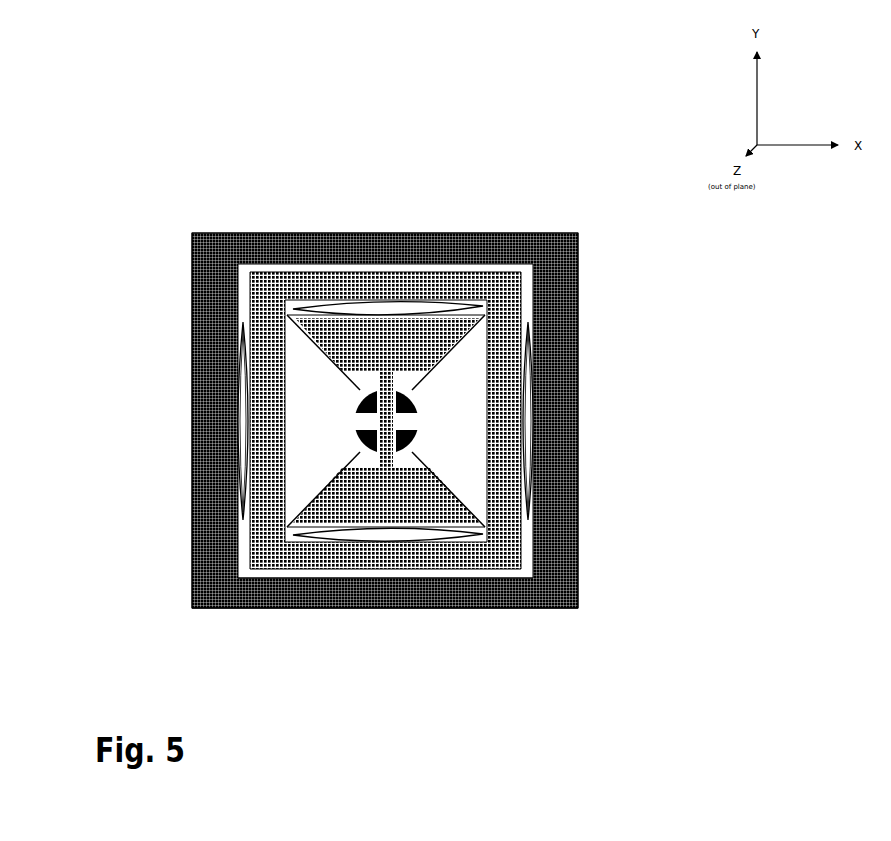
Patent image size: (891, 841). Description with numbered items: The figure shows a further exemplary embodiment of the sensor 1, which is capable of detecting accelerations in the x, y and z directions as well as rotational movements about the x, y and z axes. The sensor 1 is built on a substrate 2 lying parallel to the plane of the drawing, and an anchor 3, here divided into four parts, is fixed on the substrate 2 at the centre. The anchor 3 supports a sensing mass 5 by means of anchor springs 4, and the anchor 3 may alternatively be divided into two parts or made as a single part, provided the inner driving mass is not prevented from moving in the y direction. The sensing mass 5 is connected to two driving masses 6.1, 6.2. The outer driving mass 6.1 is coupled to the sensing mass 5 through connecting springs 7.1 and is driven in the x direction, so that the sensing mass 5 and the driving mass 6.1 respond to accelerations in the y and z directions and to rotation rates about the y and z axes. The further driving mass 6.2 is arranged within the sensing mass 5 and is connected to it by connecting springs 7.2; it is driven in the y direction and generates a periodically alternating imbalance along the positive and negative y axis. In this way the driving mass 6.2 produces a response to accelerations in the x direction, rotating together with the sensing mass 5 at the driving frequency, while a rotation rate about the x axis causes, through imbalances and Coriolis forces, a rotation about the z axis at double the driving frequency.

The sensor 1 is at (183, 345).
The substrate 2 is at (347, 191).
The anchor 3 is at (418, 410).
The anchor springs 4 is at (446, 482).
The sensing mass 5 is at (410, 285).
The driving mass 6.1 is at (217, 273).
The driving mass 6.2 is at (447, 540).
The connecting springs 7.1 is at (528, 342).
The connecting springs 7.2 is at (348, 310).